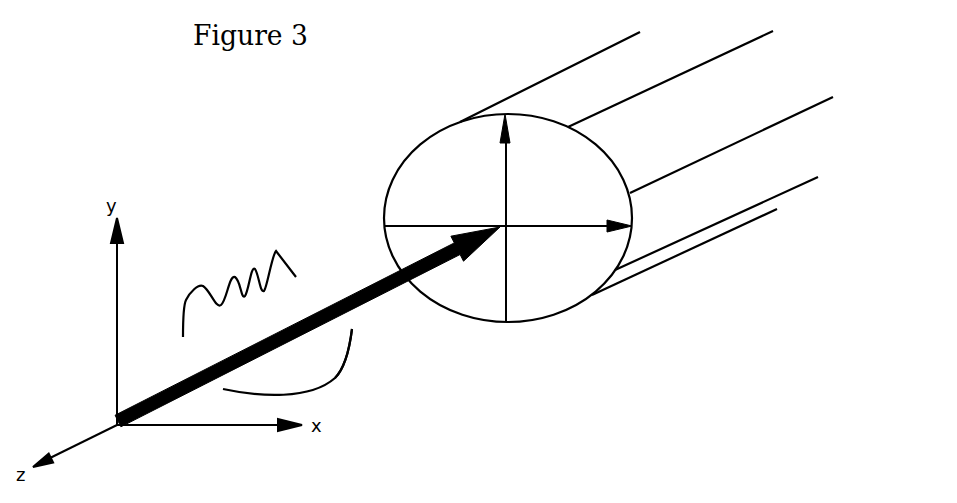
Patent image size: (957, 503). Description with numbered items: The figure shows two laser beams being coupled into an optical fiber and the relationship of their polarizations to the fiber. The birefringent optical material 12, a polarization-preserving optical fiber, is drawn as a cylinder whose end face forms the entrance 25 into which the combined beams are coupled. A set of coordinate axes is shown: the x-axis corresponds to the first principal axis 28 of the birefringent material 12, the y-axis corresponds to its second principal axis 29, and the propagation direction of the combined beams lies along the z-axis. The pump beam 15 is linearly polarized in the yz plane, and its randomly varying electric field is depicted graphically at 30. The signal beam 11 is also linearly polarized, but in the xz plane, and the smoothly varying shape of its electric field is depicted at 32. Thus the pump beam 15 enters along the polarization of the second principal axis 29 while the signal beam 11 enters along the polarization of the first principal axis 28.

The signal beam 11 is at (394, 372).
The birefringent optical material 12 is at (573, 94).
The pump beam 15 is at (203, 232).
The entrance 25 is at (558, 200).
The first principal axis 28 is at (537, 228).
The second principal axis 29 is at (503, 170).
The graphical depiction of randomly varying electric field 30 is at (263, 292).
The graphical depiction of smoothly varying electric field 32 is at (325, 370).